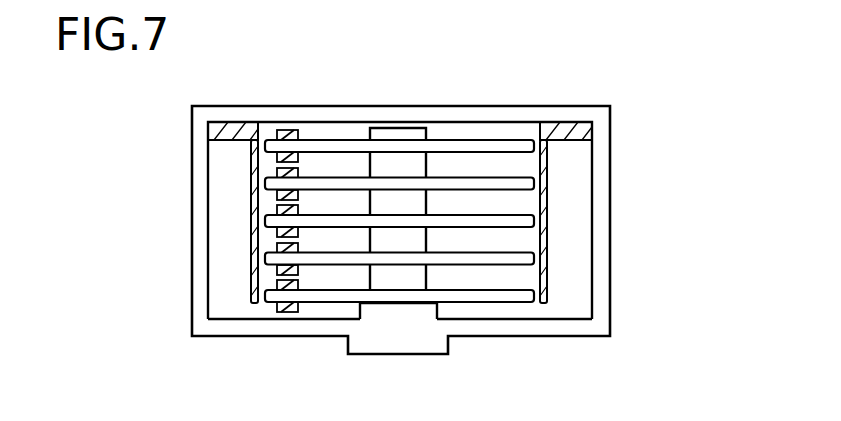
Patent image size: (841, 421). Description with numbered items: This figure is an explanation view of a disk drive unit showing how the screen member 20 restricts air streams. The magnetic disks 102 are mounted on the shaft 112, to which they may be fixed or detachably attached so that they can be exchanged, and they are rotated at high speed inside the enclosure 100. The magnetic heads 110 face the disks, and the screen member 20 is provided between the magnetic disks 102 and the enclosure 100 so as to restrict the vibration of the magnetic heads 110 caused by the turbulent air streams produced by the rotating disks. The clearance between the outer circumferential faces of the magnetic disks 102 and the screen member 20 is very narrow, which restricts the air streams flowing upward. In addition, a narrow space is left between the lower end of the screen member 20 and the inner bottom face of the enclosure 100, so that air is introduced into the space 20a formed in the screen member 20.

The enclosure 100 is at (602, 282).
The magnetic disk 102 is at (485, 147).
The magnetic head 110 is at (295, 130).
The shaft 112 is at (392, 280).
The screen member 20 is at (250, 212).
The space 20a is at (225, 268).